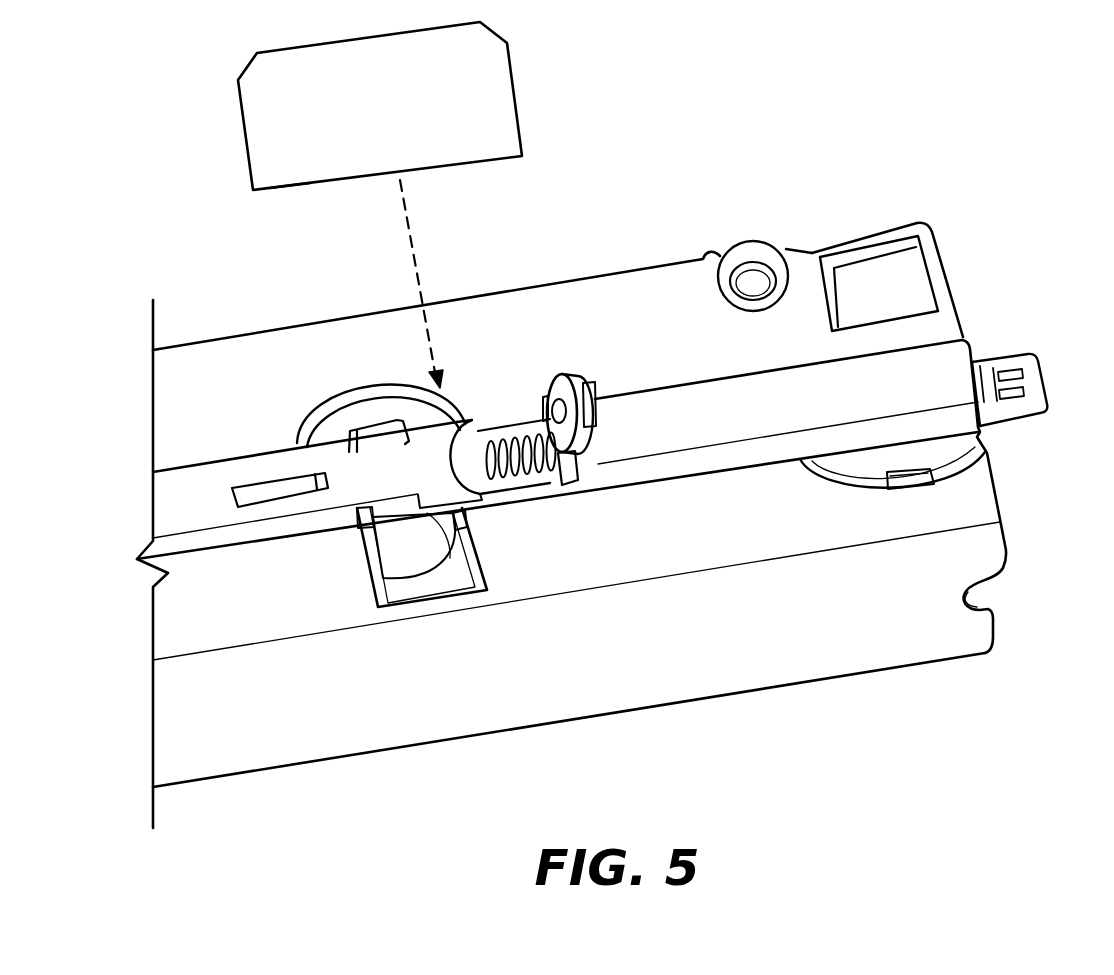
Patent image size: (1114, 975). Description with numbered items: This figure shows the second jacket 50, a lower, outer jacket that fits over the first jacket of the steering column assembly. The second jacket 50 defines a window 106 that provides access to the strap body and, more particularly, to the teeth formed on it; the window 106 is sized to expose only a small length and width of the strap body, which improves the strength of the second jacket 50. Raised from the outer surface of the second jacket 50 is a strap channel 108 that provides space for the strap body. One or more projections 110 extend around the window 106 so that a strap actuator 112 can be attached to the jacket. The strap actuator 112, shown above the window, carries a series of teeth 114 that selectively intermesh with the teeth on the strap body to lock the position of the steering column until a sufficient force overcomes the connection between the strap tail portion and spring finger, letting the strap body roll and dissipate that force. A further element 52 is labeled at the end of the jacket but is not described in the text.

The second jacket 50 is at (947, 281).
The connector plug 52 is at (1037, 367).
The window 106 is at (515, 405).
The strap channel 108 is at (783, 383).
The projections 110 is at (588, 400).
The strap actuator 112 is at (357, 118).
The teeth 114 is at (292, 188).